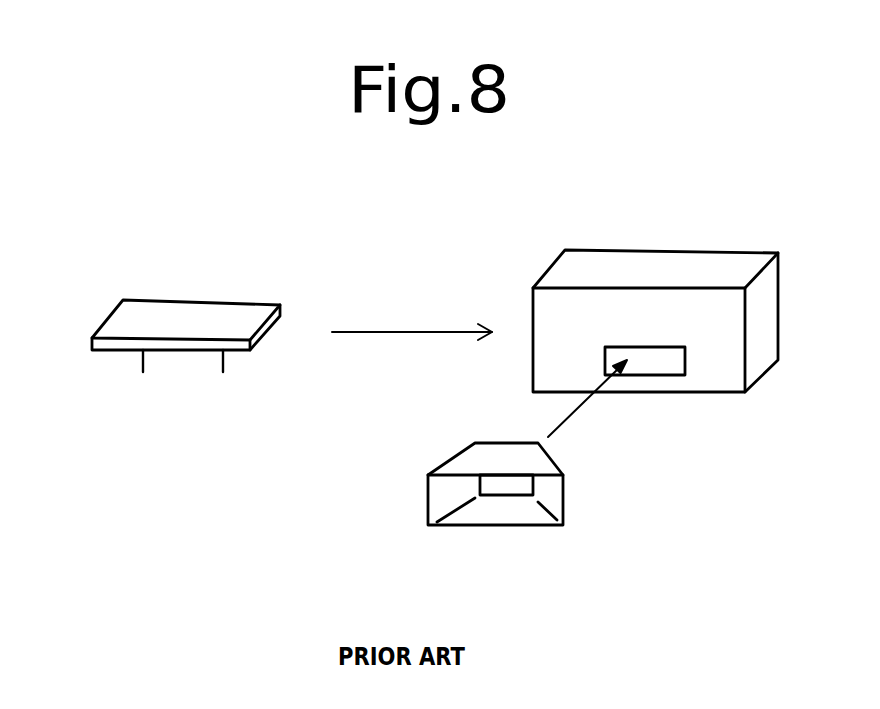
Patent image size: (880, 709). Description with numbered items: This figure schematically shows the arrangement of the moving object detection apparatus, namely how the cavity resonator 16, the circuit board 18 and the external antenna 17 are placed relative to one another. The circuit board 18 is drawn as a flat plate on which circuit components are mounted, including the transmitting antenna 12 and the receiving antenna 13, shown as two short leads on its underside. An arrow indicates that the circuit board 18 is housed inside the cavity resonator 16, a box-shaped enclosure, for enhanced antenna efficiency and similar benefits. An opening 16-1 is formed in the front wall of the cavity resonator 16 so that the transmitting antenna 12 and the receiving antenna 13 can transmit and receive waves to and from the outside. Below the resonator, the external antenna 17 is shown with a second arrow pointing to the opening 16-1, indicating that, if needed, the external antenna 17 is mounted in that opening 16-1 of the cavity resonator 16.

The transmitting antenna 12 is at (143, 362).
The receiving antenna 13 is at (223, 362).
The cavity resonator 16 is at (688, 250).
The opening 16-1 is at (685, 363).
The external antenna 17 is at (530, 527).
The circuit board 18 is at (202, 300).